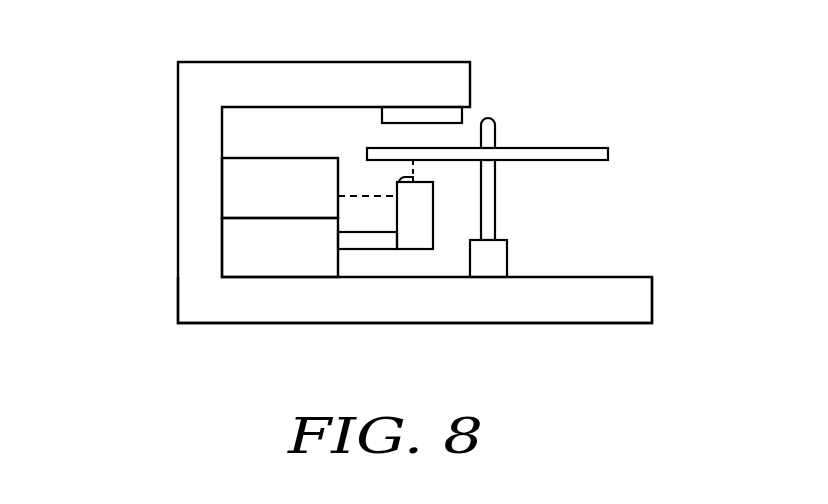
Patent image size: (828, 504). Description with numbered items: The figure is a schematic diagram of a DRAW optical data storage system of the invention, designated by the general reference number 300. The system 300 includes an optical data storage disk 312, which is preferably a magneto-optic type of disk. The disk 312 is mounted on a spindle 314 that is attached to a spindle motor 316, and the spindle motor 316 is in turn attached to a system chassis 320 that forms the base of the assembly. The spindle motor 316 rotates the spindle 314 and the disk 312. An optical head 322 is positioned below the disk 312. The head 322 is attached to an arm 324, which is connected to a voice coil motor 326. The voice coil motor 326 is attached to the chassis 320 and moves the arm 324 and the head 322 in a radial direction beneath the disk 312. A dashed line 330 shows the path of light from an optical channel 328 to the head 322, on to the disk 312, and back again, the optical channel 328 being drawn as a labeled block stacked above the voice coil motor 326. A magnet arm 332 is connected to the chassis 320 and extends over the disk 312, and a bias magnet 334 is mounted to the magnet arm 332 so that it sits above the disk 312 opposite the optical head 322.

The optical data storage system 300 is at (152, 372).
The optical data storage disk 312 is at (588, 147).
The spindle 314 is at (496, 185).
The spindle motor 316 is at (497, 258).
The system chassis 320 is at (632, 300).
The optical head 322 is at (423, 208).
The arm 324 is at (372, 242).
The voice coil motor 326 is at (232, 245).
The optical channel 328 is at (230, 183).
The dashed line 330 is at (396, 188).
The magnet arm 332 is at (288, 75).
The bias magnet 334 is at (448, 115).